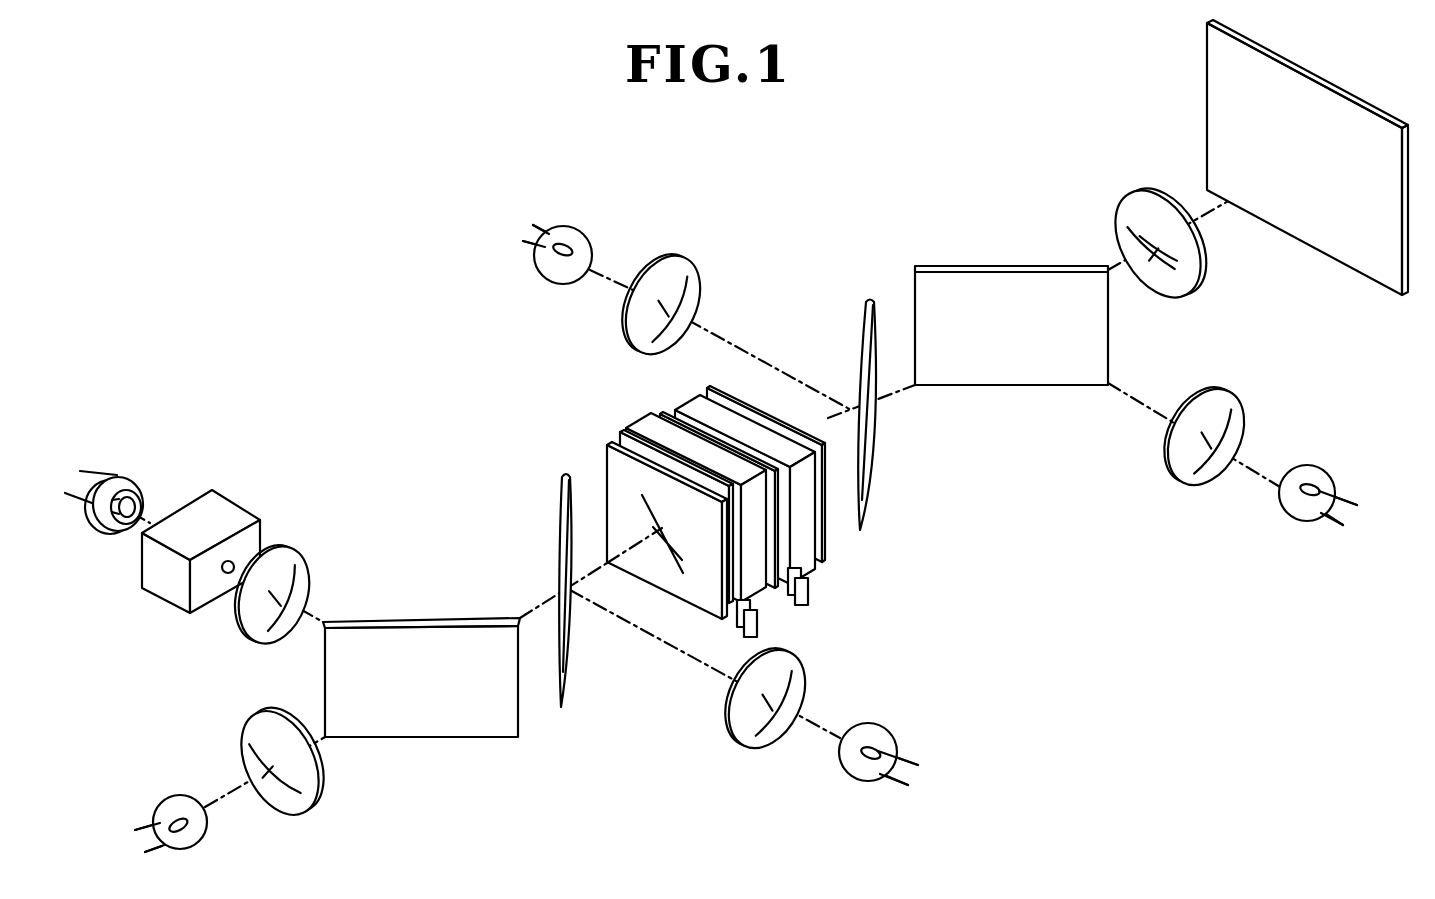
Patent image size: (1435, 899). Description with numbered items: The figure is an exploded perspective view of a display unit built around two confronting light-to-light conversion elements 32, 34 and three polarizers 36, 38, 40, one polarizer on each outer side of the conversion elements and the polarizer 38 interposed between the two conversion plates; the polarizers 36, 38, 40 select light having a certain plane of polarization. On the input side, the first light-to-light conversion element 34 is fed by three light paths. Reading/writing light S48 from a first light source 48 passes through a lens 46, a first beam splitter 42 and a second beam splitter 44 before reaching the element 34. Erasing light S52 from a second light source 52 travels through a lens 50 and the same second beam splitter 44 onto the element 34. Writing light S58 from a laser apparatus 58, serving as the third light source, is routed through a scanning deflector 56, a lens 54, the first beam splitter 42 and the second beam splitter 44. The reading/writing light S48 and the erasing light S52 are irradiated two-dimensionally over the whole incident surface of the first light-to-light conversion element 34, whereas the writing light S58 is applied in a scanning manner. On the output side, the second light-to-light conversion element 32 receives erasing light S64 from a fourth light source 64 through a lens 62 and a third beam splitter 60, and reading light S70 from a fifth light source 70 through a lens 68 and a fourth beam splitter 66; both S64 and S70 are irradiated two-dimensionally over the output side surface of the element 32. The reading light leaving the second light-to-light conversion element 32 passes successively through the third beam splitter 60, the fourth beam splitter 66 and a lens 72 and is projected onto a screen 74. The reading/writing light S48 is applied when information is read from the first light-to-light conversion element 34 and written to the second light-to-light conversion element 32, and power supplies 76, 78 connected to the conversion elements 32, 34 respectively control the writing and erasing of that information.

The second light-to-light conversion element 32 is at (684, 398).
The first light-to-light conversion element 34 is at (640, 430).
The polarizer 36 is at (607, 458).
The polarizer 38 is at (660, 412).
The polarizer 40 is at (713, 386).
The first beam splitter 42 is at (482, 720).
The second beam splitter 44 is at (568, 677).
The lens 46 is at (305, 797).
The first light source 48 is at (193, 838).
The reading/writing light S48 is at (231, 797).
The lens 50 is at (743, 743).
The second light source 52 is at (853, 777).
The erasing light S52 is at (818, 720).
The lens 54 is at (307, 560).
The scanning deflector 56 is at (220, 507).
The laser apparatus 58 is at (112, 478).
The writing light S58 is at (142, 518).
The third beam splitter 60 is at (872, 480).
The lens 62 is at (700, 280).
The fourth light source 64 is at (578, 230).
The erasing light S64 is at (605, 268).
The fourth beam splitter 66 is at (1037, 385).
The lens 68 is at (1233, 393).
The fifth light source 70 is at (1302, 518).
The reading light S70 is at (1257, 462).
The lens 72 is at (1125, 212).
The screen 74 is at (1217, 70).
The power supply 76 is at (805, 607).
The power supply 78 is at (750, 637).